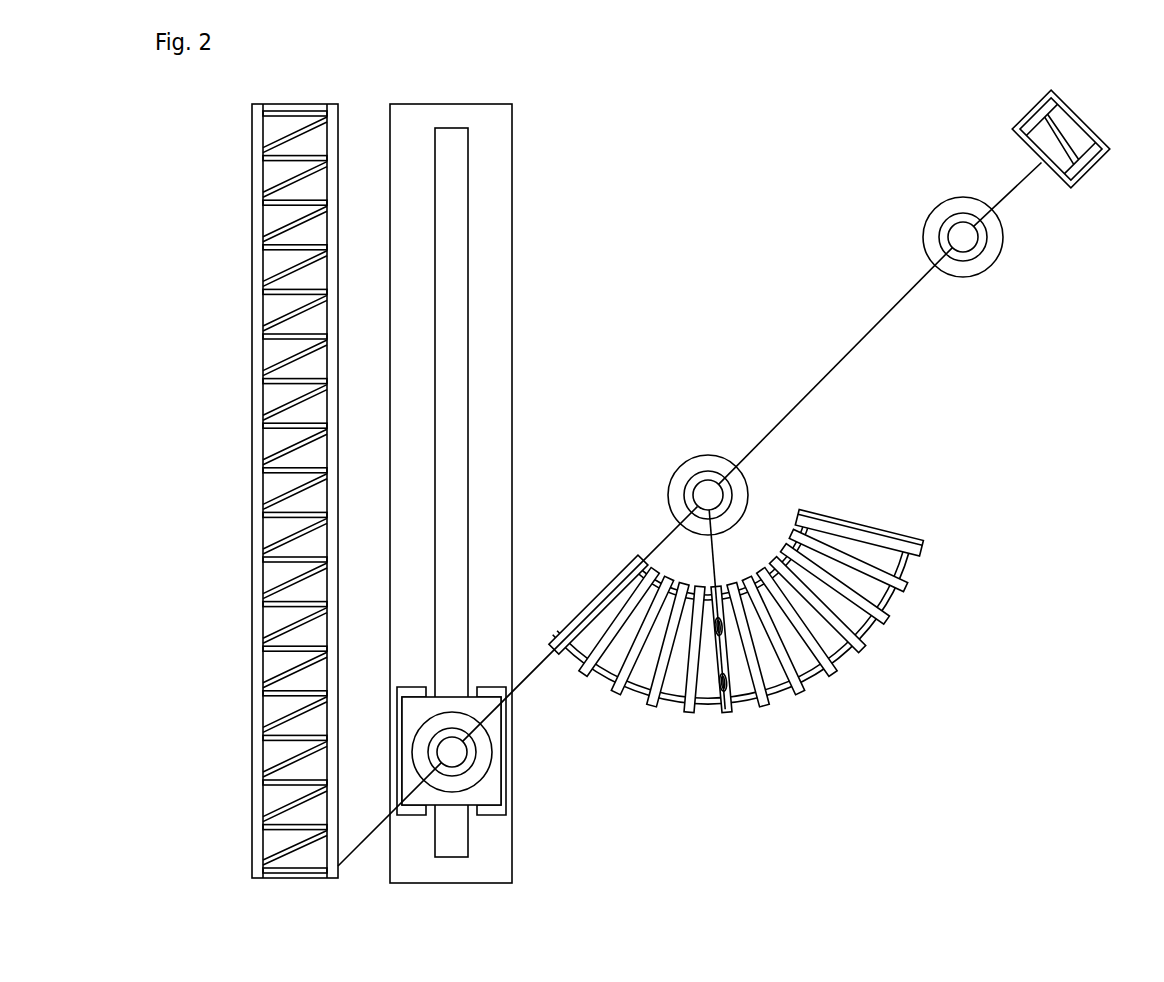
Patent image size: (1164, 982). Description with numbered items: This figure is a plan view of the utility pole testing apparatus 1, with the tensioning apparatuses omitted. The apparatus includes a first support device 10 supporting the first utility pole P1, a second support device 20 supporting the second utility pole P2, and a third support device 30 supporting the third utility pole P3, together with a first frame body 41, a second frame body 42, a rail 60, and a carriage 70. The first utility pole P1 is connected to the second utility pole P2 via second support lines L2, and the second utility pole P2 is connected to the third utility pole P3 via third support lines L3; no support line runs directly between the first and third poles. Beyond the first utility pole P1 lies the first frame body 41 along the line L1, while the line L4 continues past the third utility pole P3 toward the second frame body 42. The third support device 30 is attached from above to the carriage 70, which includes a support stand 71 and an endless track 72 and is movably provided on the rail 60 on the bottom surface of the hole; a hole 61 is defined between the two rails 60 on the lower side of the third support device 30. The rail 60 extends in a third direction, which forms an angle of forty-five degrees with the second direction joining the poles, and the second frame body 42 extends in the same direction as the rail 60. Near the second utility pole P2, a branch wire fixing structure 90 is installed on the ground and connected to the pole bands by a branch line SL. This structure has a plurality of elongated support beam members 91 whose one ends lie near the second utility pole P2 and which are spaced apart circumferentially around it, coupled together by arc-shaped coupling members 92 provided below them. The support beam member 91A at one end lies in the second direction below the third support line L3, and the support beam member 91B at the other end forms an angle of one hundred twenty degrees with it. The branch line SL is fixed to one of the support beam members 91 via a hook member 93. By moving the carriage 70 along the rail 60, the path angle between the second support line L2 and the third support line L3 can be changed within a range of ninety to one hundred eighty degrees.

The utility pole testing apparatus 1 is at (1033, 738).
The first support device 10 is at (995, 268).
The second support device 20 is at (708, 453).
The third support device 30 is at (497, 752).
The first frame body 41 is at (1098, 172).
The second frame body 42 is at (248, 305).
The rail 60 is at (413, 220).
The hole 61 is at (462, 298).
The carriage 70 is at (457, 748).
The support stand 71 is at (432, 697).
The endless track 72 is at (405, 685).
The branch wire fixing structure 90 is at (748, 626).
The support beam member 91 is at (777, 662).
The support beam member 91A is at (594, 596).
The support beam member 91B is at (865, 527).
The coupling member 92 is at (794, 543).
The hook member 93 is at (714, 632).
The first utility pole P1 is at (950, 224).
The second utility pole P2 is at (692, 481).
The third utility pole P3 is at (440, 738).
The yarn path segment L1 is at (1020, 187).
The second support line L2 is at (868, 328).
The third support line L3 is at (534, 681).
The yarn path segment L4 is at (366, 846).
The branch line SL is at (715, 553).